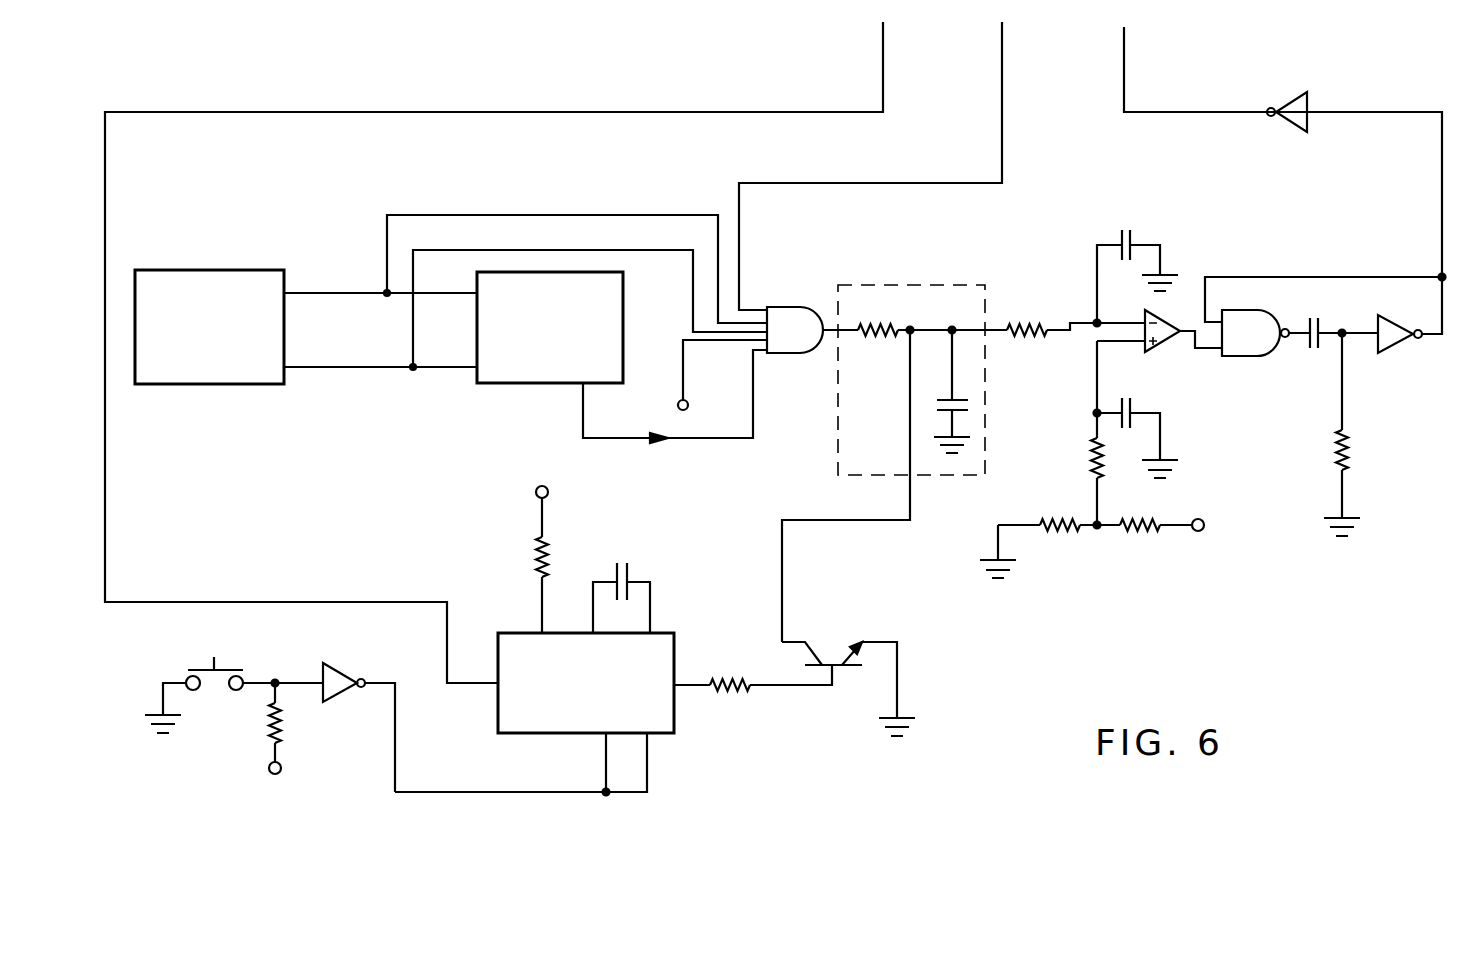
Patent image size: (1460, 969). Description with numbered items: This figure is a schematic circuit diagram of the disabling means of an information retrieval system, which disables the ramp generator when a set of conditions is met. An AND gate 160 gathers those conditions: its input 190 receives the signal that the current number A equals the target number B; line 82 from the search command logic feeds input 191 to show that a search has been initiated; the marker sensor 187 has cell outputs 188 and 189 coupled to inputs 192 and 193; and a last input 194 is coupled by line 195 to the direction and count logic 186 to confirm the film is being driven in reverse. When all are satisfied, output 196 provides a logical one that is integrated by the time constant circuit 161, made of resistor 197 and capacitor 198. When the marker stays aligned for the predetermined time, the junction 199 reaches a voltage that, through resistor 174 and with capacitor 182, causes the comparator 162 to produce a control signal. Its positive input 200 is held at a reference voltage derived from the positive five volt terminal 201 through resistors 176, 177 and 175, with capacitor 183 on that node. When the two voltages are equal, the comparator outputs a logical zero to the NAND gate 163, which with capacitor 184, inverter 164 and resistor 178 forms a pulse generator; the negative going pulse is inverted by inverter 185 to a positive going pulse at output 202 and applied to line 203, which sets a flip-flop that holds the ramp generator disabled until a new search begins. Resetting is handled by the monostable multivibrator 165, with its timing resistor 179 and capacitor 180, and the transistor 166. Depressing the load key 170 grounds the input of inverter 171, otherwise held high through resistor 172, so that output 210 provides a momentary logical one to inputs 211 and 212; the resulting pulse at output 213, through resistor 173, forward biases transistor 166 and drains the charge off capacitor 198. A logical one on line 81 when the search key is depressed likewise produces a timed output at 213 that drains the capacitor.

The line 81 is at (883, 45).
The line 82 is at (1002, 45).
The line 203 is at (1124, 48).
The output 202 is at (1268, 118).
The inverter 185 is at (1293, 118).
The marker sensor 187 is at (275, 276).
The cell output 188 is at (288, 290).
The cell output 189 is at (288, 370).
The direction and count logic 186 is at (527, 377).
The input 190 is at (680, 398).
The line 195 is at (600, 440).
The AND gate 160 is at (797, 318).
The input 191 is at (768, 328).
The input 192 is at (768, 317).
The input 193 is at (763, 338).
The input 194 is at (765, 352).
The output 196 is at (824, 326).
The time constant circuit 161 is at (958, 302).
The resistor 197 is at (882, 336).
The capacitor 198 is at (949, 402).
The junction 199 is at (948, 332).
The resistor 174 is at (1050, 332).
The capacitor 182 is at (1119, 241).
The comparator 162 is at (1148, 317).
The positive input 200 is at (1140, 346).
The capacitor 183 is at (1132, 405).
The resistor 175 is at (1092, 460).
The resistor 177 is at (1062, 530).
The resistor 176 is at (1145, 530).
The terminal 201 is at (1200, 518).
The NAND gate 163 is at (1252, 350).
The capacitor 184 is at (1322, 322).
The inverter 164 is at (1398, 345).
The resistor 178 is at (1348, 448).
The monostable multivibrator 165 is at (652, 722).
The resistor 179 is at (548, 560).
The capacitor 180 is at (632, 577).
The output 213 is at (678, 682).
The resistor 173 is at (737, 690).
The transistor 166 is at (837, 642).
The input 211 is at (600, 738).
The input 212 is at (650, 740).
The load key 170 is at (213, 668).
The resistor 172 is at (268, 715).
The inverter 171 is at (342, 670).
The output 210 is at (362, 690).